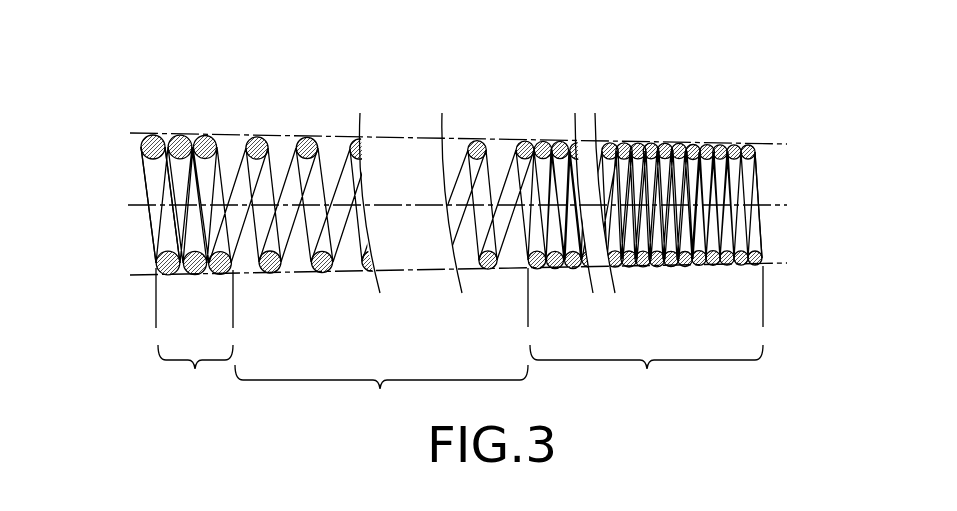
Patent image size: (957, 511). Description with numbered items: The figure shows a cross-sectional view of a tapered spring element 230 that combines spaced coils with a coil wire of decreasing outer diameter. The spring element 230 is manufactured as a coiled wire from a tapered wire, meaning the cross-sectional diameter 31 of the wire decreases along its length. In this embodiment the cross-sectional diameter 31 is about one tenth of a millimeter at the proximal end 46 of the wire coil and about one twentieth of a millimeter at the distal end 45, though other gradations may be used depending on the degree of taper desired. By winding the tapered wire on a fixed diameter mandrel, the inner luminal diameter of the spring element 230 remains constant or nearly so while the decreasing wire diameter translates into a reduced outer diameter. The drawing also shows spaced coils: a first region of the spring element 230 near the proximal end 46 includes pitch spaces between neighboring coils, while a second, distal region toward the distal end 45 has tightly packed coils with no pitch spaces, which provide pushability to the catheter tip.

The tapered spring element 230 is at (148, 68).
The cross-sectional diameter of the wire 31 is at (150, 146).
The proximal end 46 is at (140, 167).
The distal end 45 is at (763, 232).